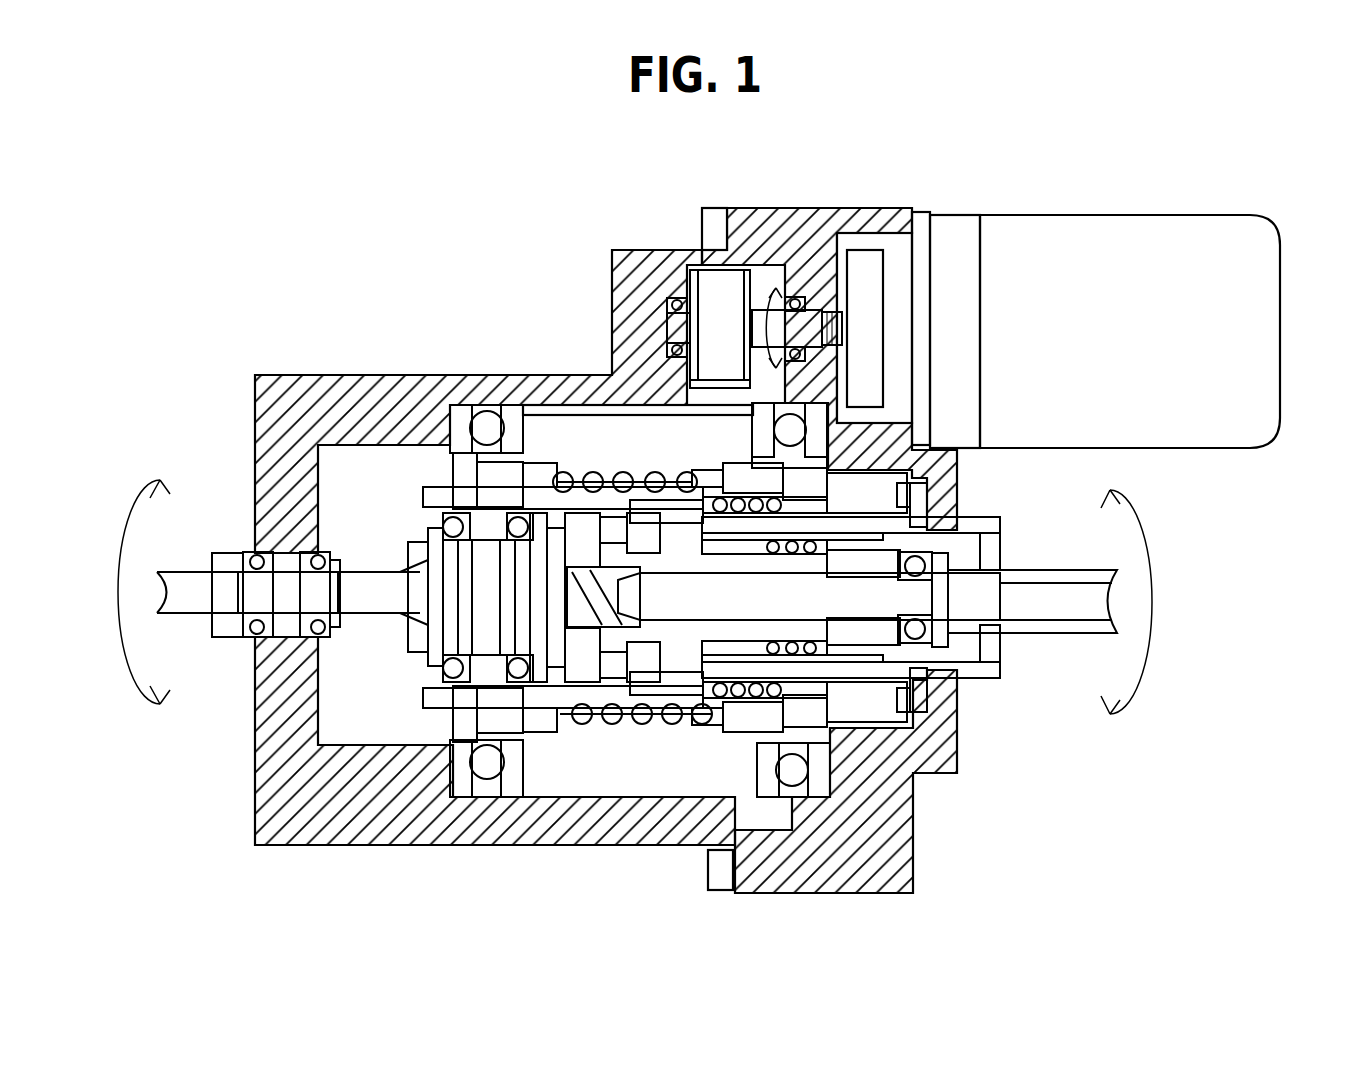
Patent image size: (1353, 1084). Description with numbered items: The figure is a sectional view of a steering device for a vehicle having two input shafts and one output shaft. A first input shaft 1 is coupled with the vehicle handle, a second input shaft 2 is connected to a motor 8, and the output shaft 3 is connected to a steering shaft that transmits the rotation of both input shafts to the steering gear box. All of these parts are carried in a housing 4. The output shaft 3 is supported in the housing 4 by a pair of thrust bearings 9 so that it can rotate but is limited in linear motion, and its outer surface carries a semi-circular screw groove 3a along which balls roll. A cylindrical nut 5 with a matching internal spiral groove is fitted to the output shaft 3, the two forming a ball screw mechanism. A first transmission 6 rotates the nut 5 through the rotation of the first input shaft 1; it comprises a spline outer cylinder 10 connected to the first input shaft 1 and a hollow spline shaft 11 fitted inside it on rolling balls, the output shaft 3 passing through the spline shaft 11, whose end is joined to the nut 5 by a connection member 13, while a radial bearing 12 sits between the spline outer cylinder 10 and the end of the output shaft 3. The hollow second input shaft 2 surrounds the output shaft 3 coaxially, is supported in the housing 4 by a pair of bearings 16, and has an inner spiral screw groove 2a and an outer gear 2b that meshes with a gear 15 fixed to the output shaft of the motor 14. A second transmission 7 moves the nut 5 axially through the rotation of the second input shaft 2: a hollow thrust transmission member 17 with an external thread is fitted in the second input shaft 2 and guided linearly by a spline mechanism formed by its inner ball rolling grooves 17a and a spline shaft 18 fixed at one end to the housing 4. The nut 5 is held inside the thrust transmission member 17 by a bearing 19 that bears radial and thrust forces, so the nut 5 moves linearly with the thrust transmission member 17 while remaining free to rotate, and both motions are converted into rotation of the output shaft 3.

The first input shaft 1 is at (1112, 640).
The second input shaft 2 is at (608, 420).
The spiral screw groove 2a is at (586, 480).
The gear 2b is at (716, 376).
The output shaft 3 is at (357, 577).
The screw groove 3a is at (398, 575).
The housing 4 is at (577, 842).
The nut 5 is at (450, 540).
The first transmission 6 is at (1005, 838).
The second transmission 7 is at (300, 272).
The motor 8 is at (1072, 236).
The thrust bearings 9 is at (250, 640).
The spline outer cylinder 10 is at (905, 655).
The spline shaft 11 is at (855, 660).
The radial bearing 12 is at (937, 650).
The connection member 13 is at (588, 667).
The output shaft of the motor 14 is at (784, 290).
The gear 15 is at (706, 284).
The bearings 16 is at (490, 762).
The thrust transmission member 17 is at (468, 522).
The ball rolling grooves 17a is at (826, 508).
The spline shaft 18 is at (513, 508).
The bearing 19 is at (462, 470).